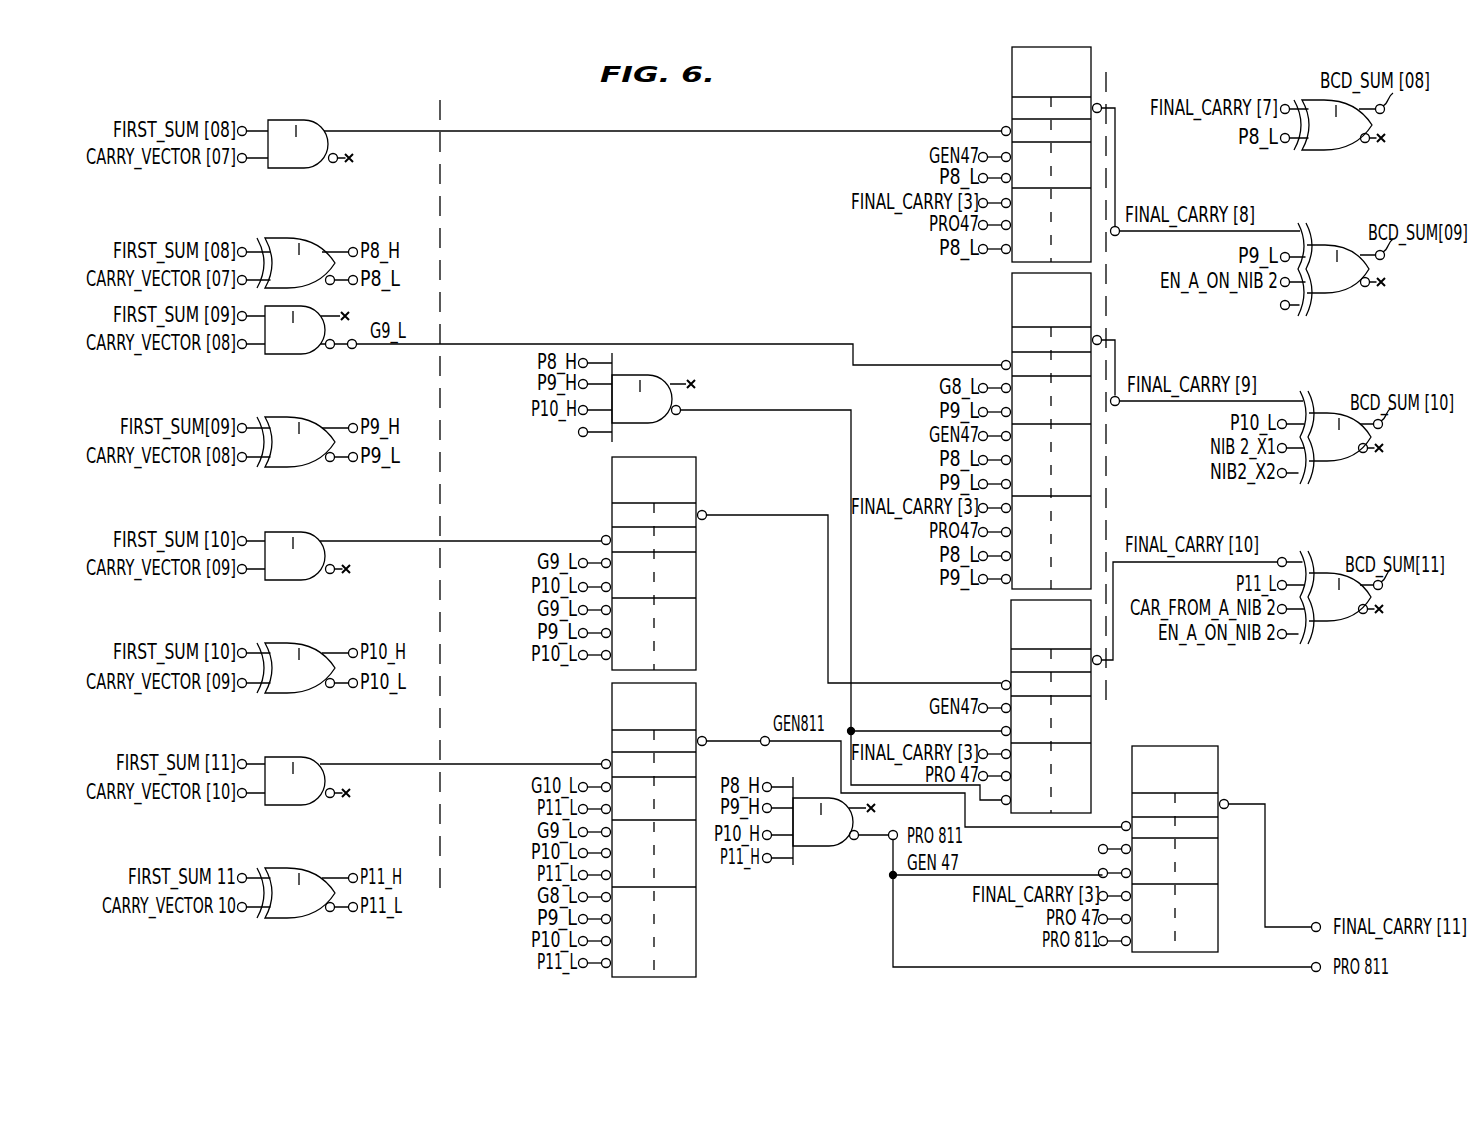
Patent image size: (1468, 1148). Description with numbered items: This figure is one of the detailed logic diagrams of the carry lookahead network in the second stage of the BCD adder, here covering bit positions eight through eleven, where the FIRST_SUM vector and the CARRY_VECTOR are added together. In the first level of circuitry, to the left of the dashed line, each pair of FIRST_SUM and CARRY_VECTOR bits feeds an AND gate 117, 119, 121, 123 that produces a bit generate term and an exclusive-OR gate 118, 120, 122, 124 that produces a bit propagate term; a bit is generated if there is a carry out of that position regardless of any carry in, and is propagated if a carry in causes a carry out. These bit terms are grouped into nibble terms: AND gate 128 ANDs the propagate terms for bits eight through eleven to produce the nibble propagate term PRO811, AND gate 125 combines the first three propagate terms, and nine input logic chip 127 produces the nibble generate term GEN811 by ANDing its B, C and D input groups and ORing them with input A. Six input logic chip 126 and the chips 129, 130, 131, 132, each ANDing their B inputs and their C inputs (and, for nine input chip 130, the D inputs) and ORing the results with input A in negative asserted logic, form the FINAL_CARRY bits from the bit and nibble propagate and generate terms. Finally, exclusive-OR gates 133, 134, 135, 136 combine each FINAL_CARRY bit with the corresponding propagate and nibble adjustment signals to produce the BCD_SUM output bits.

The AND gate 117 is at (302, 121).
The exclusive-OR gate 118 is at (289, 238).
The AND gate 119 is at (276, 354).
The exclusive-OR gate 120 is at (304, 417).
The AND gate 121 is at (316, 532).
The exclusive-OR gate 122 is at (301, 643).
The AND gate 123 is at (284, 757).
The exclusive-OR gate 124 is at (301, 869).
The AND gate 125 is at (649, 377).
The six input logic chip 126 is at (698, 492).
The nine input logic chip 127 is at (698, 702).
The AND gate 128 is at (827, 850).
The six input logic chip 129 is at (1012, 84).
The nine input logic chip 130 is at (1012, 310).
The six input logic chip 131 is at (1012, 644).
The six input logic chip 132 is at (1200, 746).
The exclusive-OR gate 133 is at (1308, 99).
The exclusive-OR gate 134 is at (1319, 245).
The exclusive-OR gate 135 is at (1337, 462).
The exclusive-OR gate 136 is at (1331, 622).